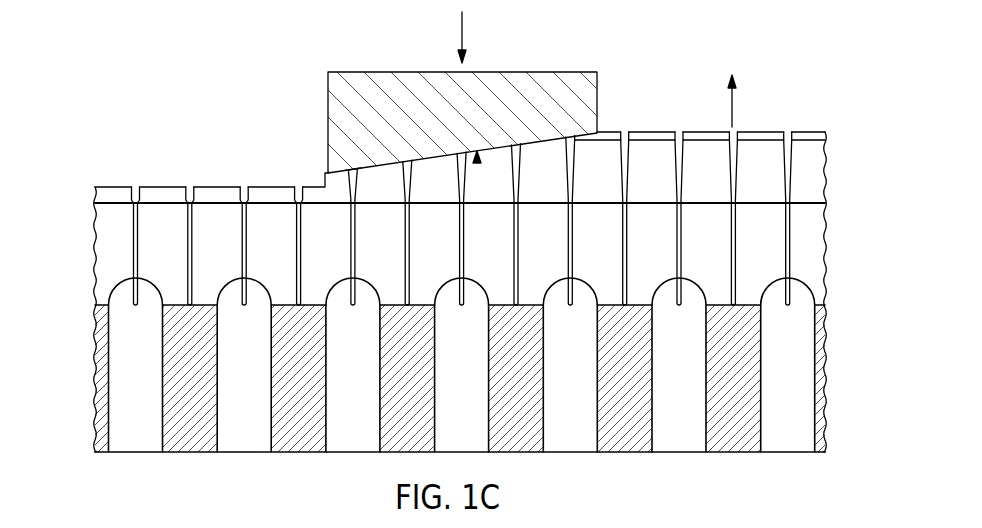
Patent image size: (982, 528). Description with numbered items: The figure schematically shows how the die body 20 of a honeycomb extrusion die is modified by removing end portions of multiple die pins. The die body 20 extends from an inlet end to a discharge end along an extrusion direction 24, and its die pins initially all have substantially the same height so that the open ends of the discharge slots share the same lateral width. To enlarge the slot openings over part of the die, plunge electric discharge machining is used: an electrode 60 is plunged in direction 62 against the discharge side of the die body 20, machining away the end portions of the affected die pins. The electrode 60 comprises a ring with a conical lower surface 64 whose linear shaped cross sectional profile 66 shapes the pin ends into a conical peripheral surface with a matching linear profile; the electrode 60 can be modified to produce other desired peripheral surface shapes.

The die body 20 is at (752, 115).
The extrusion direction 24 is at (732, 103).
The electrode 60 is at (565, 72).
The direction 62 is at (463, 28).
The conical lower surface 64 is at (477, 162).
The linear shaped cross sectional profile 66 is at (353, 172).